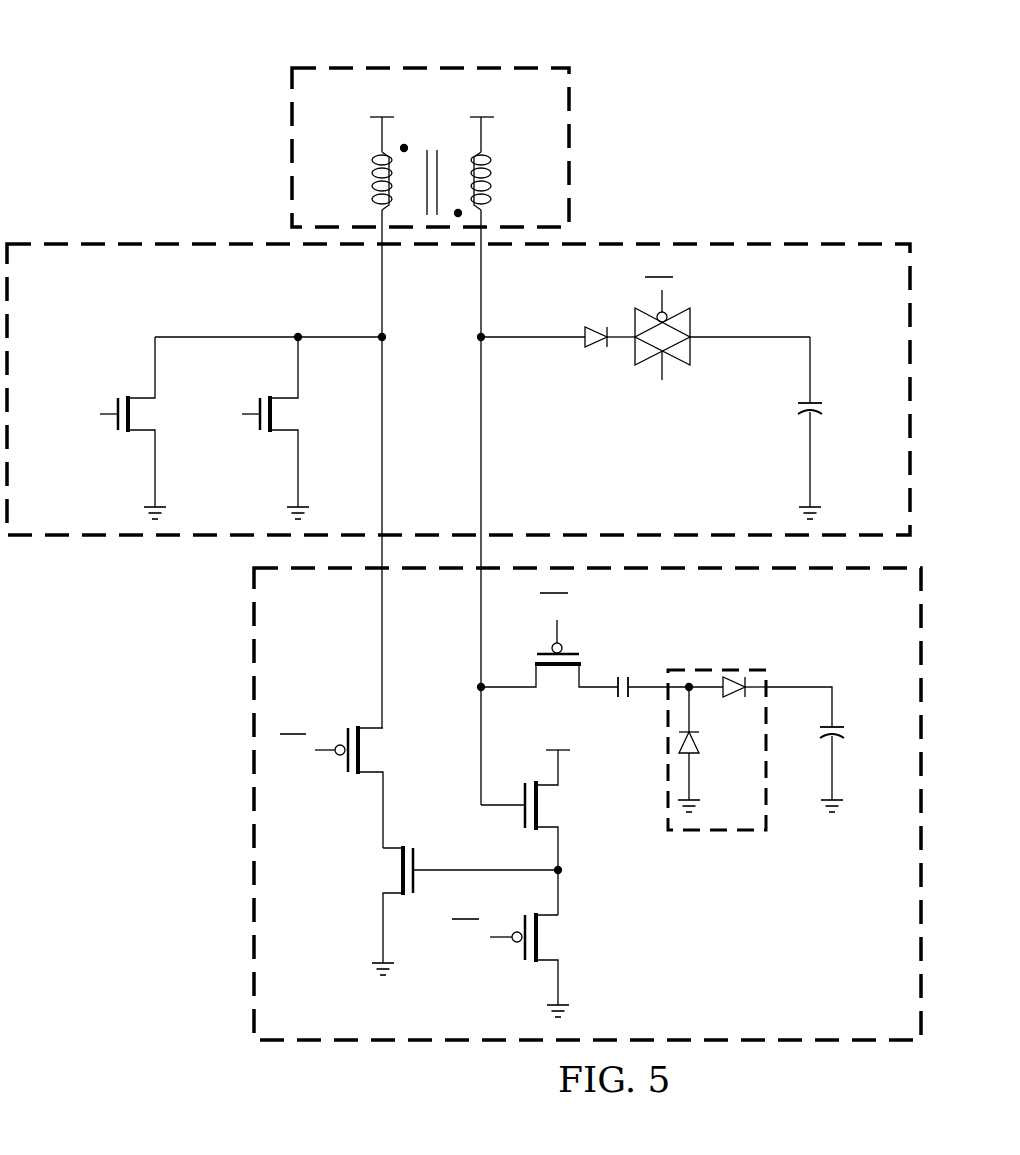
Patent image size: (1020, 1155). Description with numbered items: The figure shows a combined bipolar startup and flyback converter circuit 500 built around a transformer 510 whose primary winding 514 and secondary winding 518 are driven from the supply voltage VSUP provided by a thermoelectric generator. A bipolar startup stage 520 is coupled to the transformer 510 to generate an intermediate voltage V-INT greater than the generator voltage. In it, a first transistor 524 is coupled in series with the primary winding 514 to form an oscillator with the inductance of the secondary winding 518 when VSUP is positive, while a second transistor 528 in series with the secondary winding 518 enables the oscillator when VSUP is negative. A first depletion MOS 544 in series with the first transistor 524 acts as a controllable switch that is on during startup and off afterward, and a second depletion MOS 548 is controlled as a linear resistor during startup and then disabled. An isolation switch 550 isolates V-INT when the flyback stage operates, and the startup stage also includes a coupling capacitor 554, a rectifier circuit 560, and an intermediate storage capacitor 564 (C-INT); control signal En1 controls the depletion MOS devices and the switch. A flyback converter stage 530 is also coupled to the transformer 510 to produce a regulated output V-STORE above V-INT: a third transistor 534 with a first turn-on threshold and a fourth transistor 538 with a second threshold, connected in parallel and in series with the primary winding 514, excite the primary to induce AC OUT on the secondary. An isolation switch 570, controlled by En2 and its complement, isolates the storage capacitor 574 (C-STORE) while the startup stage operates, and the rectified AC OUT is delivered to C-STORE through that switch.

The combined bipolar startup and flyback converter circuit 500 is at (745, 87).
The transformer 510 is at (345, 64).
The primary winding 514 is at (372, 185).
The secondary winding 518 is at (488, 185).
The bipolar startup stage 520 is at (248, 830).
The first transistor 524 is at (416, 882).
The second transistor 528 is at (523, 815).
The flyback converter stage 530 is at (168, 241).
The third transistor 534 is at (116, 432).
The fourth transistor 538 is at (258, 432).
The first depletion MOS 544 is at (344, 772).
The second depletion MOS 548 is at (523, 961).
The isolation switch 550 is at (574, 643).
The coupling capacitor 554 is at (626, 700).
The rectifier circuit 560 is at (708, 835).
The intermediate storage capacitor 564 is at (846, 733).
The isolation switch 570 is at (692, 356).
The storage capacitor 574 is at (824, 409).